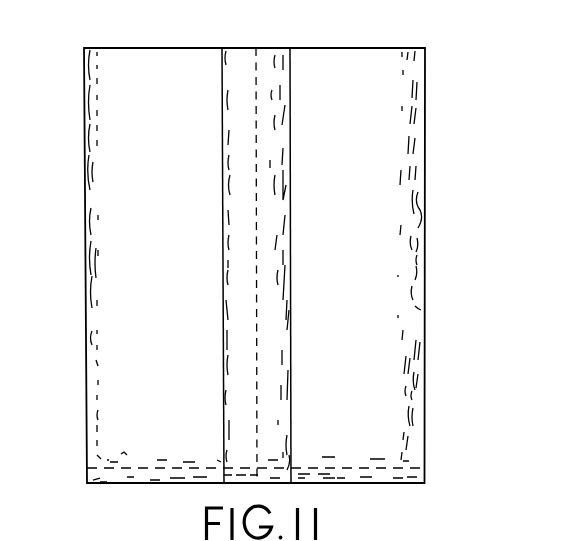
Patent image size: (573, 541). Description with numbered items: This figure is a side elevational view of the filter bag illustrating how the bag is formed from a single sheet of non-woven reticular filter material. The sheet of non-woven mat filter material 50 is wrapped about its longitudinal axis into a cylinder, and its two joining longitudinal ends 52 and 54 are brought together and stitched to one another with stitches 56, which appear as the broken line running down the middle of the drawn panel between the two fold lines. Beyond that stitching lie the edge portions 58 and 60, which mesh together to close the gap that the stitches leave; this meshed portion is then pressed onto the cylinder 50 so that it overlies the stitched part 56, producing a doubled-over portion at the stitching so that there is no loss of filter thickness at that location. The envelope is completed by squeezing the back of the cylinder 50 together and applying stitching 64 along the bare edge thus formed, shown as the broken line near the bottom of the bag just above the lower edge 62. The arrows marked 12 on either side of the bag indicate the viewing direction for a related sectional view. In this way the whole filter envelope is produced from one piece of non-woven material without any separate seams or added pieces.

The section line / viewing direction arrows 12 is at (75, 273).
The non-woven mat filter material 50 is at (413, 92).
The longitudinal end 52 is at (218, 28).
The longitudinal end 54 is at (303, 55).
The stitches 56 is at (259, 51).
The edge portion 58 is at (227, 92).
The edge portion 60 is at (287, 90).
The bottom edge 62 is at (428, 483).
The stitching 64 is at (406, 466).